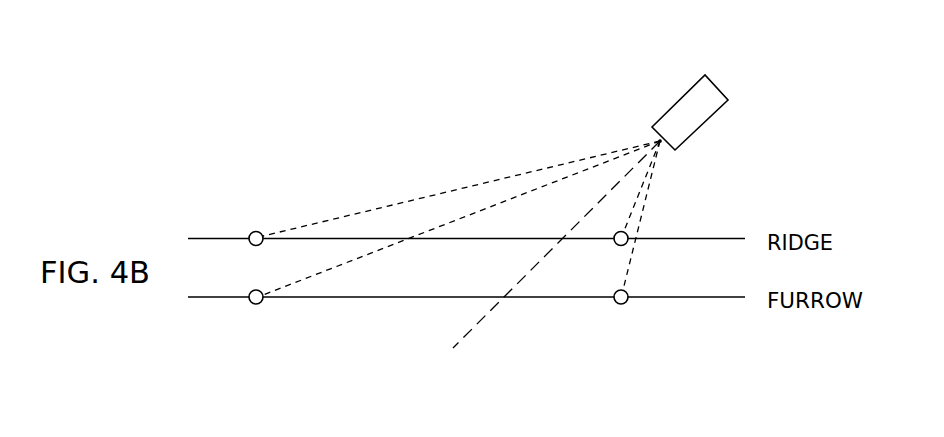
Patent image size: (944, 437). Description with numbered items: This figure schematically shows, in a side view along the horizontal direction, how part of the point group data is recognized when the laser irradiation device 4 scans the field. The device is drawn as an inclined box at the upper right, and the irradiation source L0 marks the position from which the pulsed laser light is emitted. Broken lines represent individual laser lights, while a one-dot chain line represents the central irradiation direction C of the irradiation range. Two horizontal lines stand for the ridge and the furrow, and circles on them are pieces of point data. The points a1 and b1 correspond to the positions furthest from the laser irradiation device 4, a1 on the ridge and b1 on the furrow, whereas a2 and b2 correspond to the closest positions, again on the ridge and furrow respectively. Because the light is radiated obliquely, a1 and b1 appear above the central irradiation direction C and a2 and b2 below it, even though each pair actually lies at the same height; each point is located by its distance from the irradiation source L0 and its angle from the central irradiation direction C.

The laser irradiation device 4 is at (716, 87).
The irradiation source L0 is at (657, 138).
The central irradiation direction C is at (547, 260).
The point data a1 is at (258, 224).
The point data b1 is at (256, 282).
The point data a2 is at (611, 227).
The point data b2 is at (608, 282).